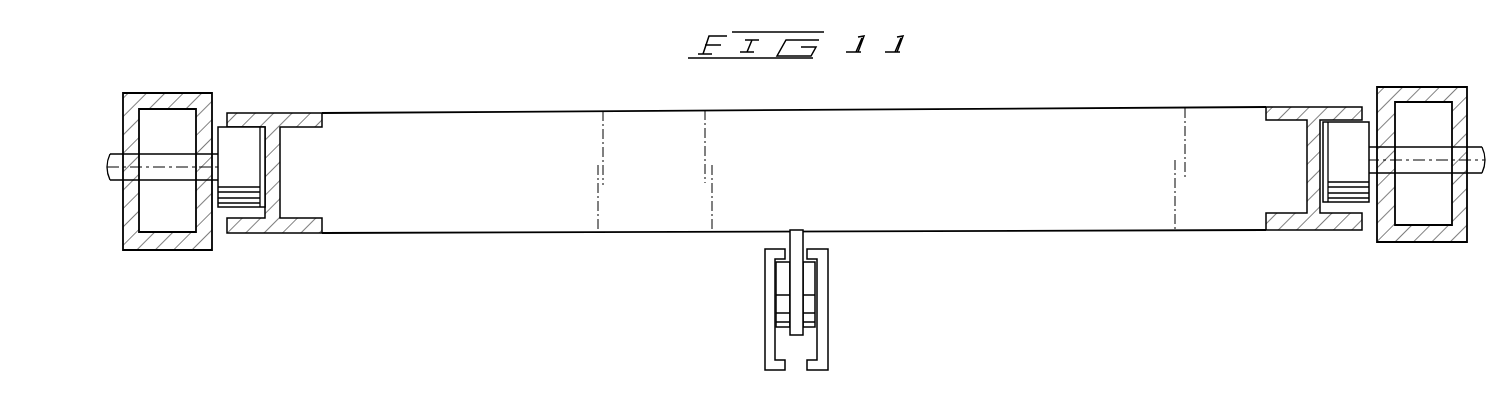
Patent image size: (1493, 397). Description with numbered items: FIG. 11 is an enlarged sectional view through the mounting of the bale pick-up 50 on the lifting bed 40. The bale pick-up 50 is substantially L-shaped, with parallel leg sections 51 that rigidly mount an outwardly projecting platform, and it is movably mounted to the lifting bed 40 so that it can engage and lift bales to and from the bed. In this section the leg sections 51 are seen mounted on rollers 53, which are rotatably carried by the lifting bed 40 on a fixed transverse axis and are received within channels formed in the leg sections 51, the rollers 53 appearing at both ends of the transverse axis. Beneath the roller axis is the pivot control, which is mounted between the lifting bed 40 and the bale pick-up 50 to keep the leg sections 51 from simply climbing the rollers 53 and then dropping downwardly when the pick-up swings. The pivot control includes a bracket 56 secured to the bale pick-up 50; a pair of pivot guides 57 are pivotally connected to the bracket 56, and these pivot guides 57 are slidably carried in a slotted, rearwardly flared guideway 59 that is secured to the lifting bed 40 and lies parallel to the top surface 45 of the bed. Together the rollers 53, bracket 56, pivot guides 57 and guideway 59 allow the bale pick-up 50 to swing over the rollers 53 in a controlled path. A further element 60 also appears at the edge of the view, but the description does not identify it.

The lifting bed 40 is at (160, 93).
The top surface 45 is at (537, 396).
The bale pick-up 50 is at (966, 86).
The leg sections 51 is at (292, 224).
The rollers 53 is at (247, 162).
The bracket 56 is at (803, 238).
The pivot guides 57 is at (781, 305).
The guideway 59 is at (764, 278).
The frame member 60 is at (454, 384).